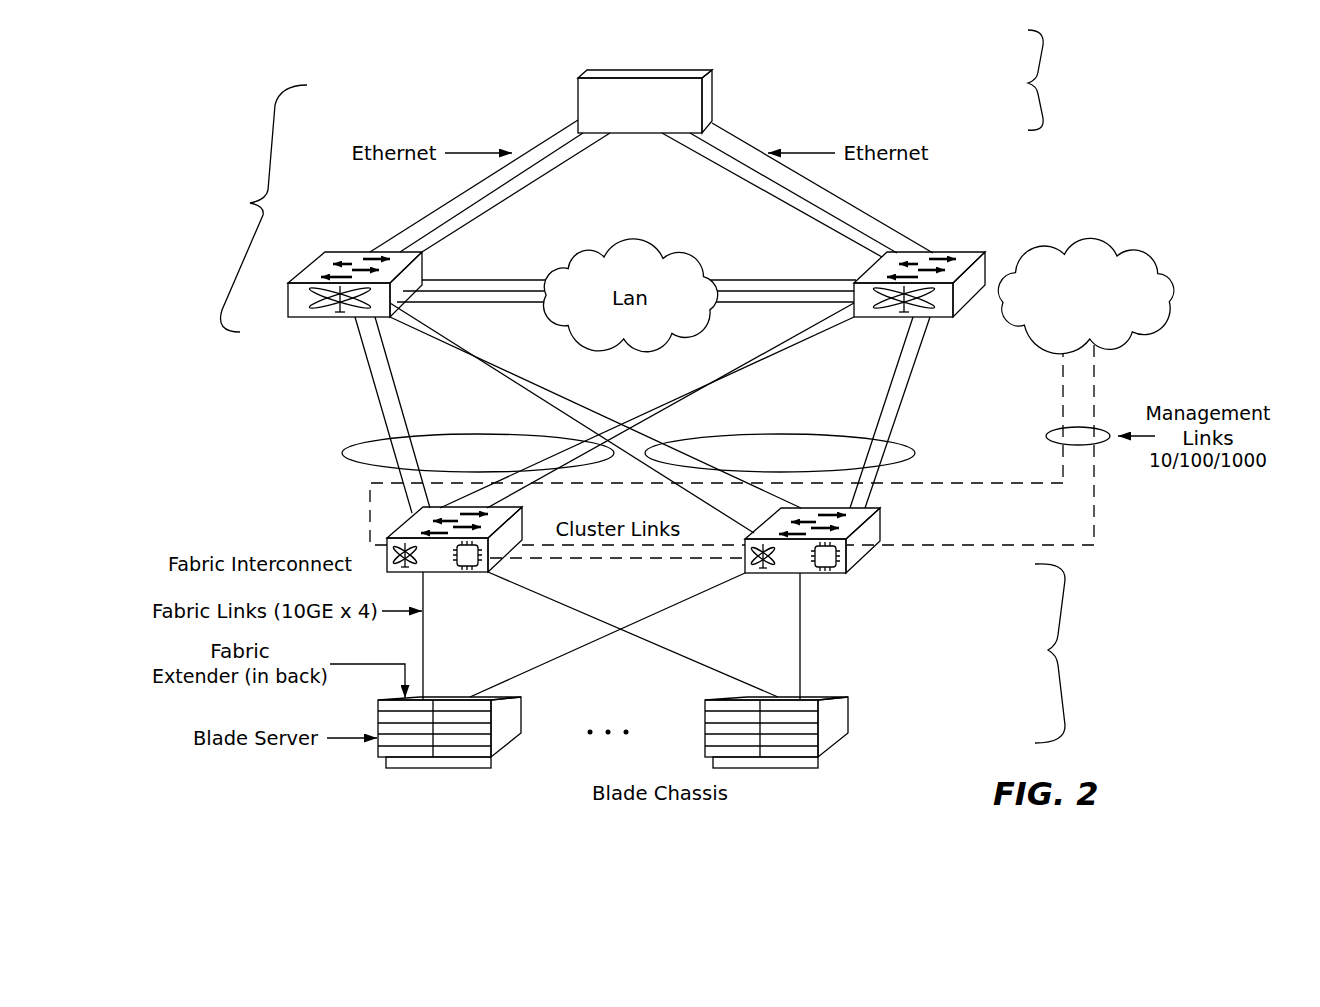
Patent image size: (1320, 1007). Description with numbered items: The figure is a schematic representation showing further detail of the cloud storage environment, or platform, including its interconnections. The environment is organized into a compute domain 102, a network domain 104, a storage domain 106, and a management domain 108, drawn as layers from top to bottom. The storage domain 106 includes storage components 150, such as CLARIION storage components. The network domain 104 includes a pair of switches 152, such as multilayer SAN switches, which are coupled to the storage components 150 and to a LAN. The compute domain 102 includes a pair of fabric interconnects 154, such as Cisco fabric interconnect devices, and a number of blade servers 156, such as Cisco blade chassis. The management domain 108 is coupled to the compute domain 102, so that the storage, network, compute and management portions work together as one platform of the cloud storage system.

The storage components 150 is at (696, 68).
The switches 152 is at (338, 252).
The fabric interconnects 154 is at (449, 572).
The blade servers 156 is at (425, 768).
The compute domain 102 is at (1106, 690).
The network domain 104 is at (189, 226).
The storage domain 106 is at (1081, 116).
The management domain 108 is at (1186, 283).